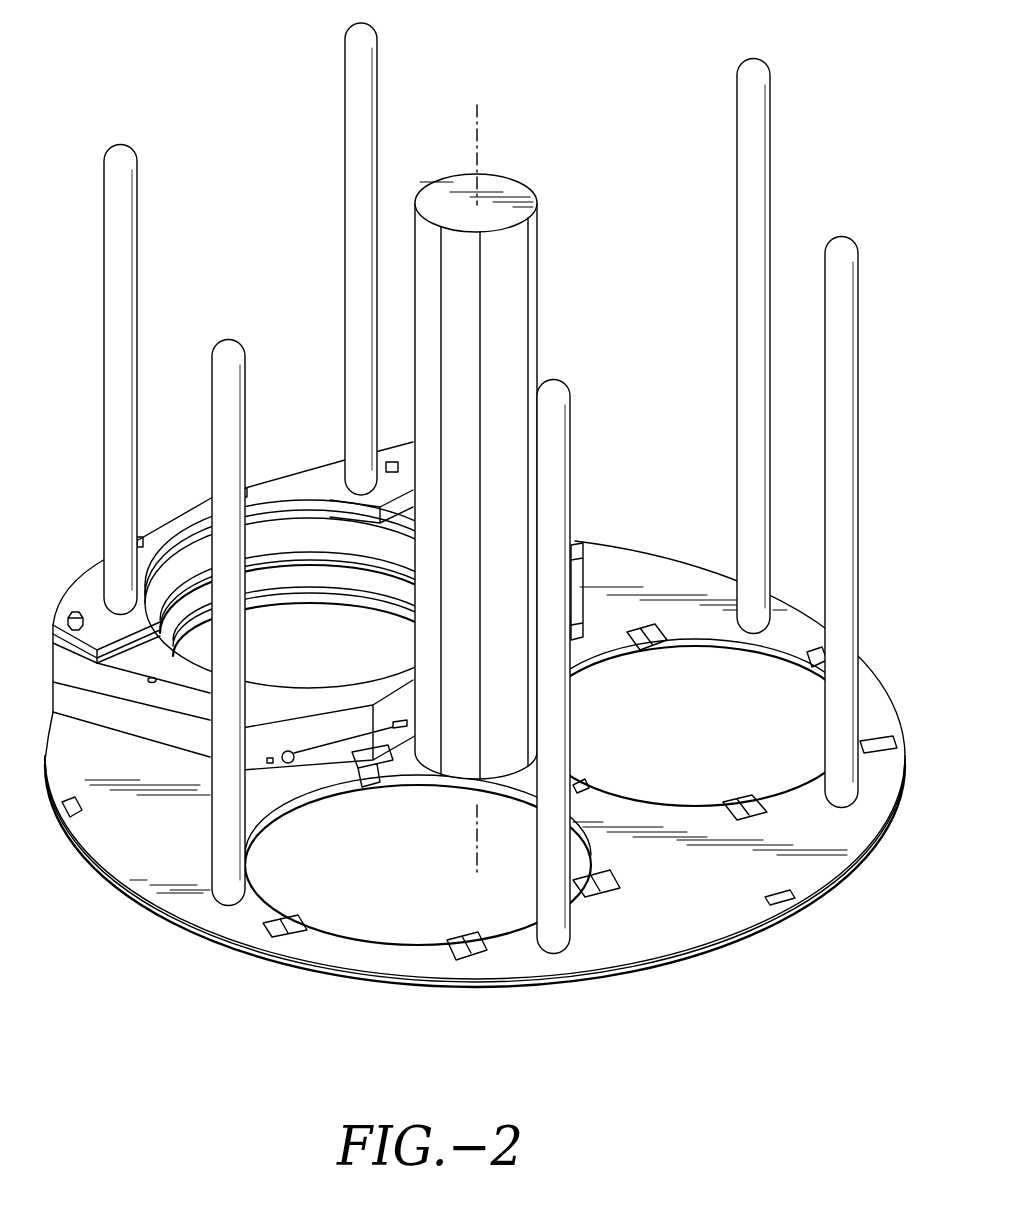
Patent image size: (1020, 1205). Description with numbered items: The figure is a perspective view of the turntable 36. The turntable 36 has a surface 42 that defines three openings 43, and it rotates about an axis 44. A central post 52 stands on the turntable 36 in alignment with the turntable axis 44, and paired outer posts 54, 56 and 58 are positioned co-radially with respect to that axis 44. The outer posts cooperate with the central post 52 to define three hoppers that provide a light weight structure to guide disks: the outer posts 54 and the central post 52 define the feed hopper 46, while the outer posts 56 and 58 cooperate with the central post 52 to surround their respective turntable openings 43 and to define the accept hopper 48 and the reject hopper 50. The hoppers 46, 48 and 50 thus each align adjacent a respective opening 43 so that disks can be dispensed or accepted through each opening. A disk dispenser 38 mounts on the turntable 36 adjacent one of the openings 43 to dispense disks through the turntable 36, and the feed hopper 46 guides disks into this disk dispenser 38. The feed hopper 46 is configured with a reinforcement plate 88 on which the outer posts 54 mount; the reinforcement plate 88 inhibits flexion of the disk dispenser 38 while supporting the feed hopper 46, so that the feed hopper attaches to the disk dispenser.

The turntable 36 is at (877, 672).
The disk dispenser 38 is at (192, 688).
The surface 42 is at (808, 837).
The openings 43 is at (308, 547).
The axis 44 is at (482, 133).
The feed hopper 46 is at (233, 319).
The accept hopper 48 is at (816, 425).
The reject hopper 50 is at (552, 1050).
The central post 52 is at (517, 286).
The outer posts 54 is at (137, 193).
The outer posts 56 is at (741, 52).
The outer posts 58 is at (223, 857).
The reinforcement plate 88 is at (80, 600).